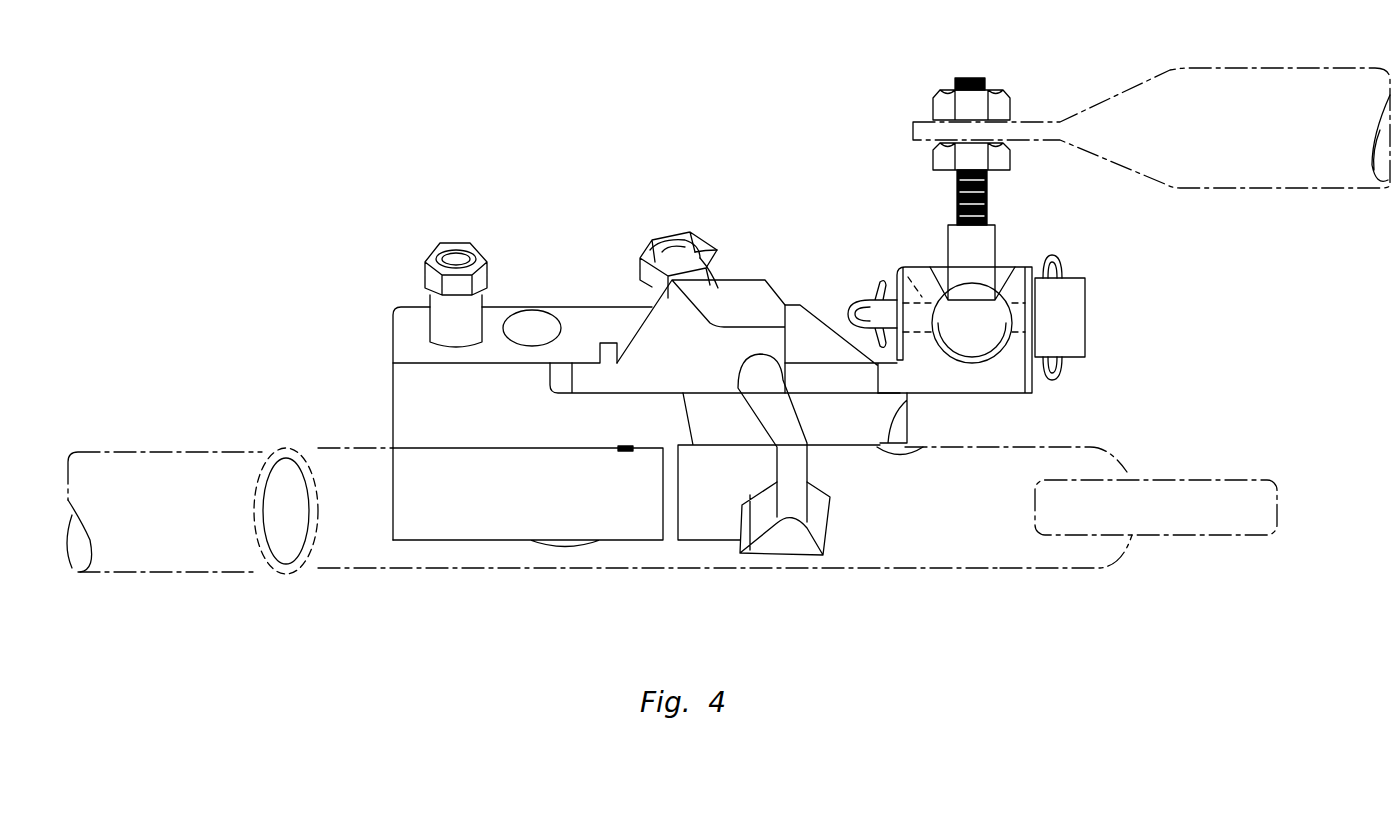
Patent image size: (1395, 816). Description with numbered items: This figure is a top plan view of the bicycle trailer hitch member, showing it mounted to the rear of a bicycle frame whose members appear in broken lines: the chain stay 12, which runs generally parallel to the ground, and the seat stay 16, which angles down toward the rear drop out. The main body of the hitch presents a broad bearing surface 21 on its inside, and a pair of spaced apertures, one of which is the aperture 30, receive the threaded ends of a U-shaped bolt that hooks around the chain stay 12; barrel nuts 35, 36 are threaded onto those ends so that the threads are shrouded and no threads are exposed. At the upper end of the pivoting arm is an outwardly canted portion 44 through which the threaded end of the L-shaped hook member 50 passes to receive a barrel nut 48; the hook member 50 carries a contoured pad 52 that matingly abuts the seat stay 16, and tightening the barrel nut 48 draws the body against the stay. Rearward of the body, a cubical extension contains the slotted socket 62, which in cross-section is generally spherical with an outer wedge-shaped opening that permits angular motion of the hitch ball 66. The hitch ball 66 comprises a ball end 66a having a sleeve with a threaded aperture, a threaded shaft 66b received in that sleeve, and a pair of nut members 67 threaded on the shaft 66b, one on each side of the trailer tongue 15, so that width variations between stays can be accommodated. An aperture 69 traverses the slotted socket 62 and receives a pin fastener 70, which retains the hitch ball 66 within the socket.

The chain stay 12 is at (180, 522).
The trailer tongue 15 is at (1272, 140).
The seat stay 16 is at (372, 522).
The bearing surface 21 is at (900, 447).
The aperture 30 is at (535, 330).
The barrel nut 35 is at (455, 243).
The barrel nut 36 is at (663, 240).
The outwardly canted portion 44 is at (652, 330).
The barrel nut 48 is at (702, 250).
The hook member 50 is at (805, 470).
The pad 52 is at (820, 498).
The slotted socket 62 is at (980, 345).
The hitch ball 66 is at (973, 235).
The ball end 66a is at (980, 262).
The threaded shaft 66b is at (945, 244).
The nut members 67 is at (1000, 103).
The aperture 69 is at (895, 275).
The pin fastener 70 is at (1070, 328).